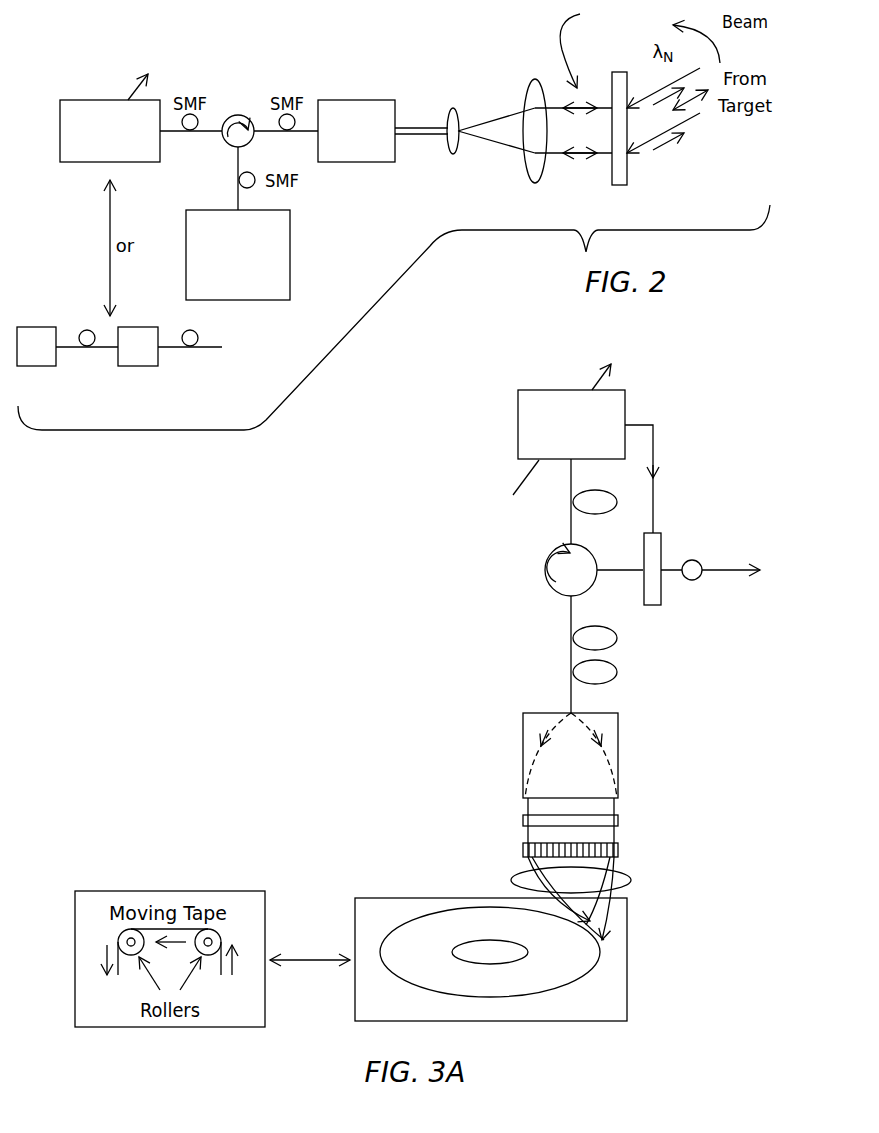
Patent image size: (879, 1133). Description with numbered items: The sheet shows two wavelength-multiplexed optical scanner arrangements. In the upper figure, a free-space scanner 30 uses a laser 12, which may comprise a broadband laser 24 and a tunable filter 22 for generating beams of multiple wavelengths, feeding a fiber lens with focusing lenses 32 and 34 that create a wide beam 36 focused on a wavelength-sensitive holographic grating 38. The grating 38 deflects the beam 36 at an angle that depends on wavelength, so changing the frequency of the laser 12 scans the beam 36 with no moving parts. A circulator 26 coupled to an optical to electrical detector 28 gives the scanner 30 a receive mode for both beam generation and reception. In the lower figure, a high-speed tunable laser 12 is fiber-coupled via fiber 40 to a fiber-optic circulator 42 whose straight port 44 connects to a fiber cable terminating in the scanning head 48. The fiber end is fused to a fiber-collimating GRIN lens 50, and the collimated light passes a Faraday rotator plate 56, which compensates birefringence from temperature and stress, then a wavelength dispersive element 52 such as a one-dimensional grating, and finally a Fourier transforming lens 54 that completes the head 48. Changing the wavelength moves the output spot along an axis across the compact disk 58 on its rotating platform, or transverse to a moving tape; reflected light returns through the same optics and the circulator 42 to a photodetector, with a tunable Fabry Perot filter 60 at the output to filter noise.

In FIG. 2, the laser 12 is at (128, 162).
In FIG. 3A, the laser 12 is at (625, 393).
In FIG. 2, the tunable filter 22 is at (137, 366).
In FIG. 2, the broadband laser 24 is at (37, 366).
In FIG. 2, the circulator 26 is at (239, 114).
In FIG. 2, the optical to electrical detector 28 is at (290, 253).
In FIG. 2, the free-space scanner 30 is at (304, 28).
In FIG. 2, the focusing lens 32 is at (453, 108).
In FIG. 2, the focusing lens 34 is at (535, 78).
In FIG. 2, the beam 36 is at (640, 44).
In FIG. 2, the holographic grating 38 is at (627, 180).
In FIG. 3A, the fiber 40 is at (571, 524).
In FIG. 3A, the fiber-optic circulator 42 is at (550, 588).
In FIG. 3A, the straight port 44 is at (557, 600).
In FIG. 3A, the scanning head 48 is at (618, 760).
In FIG. 3A, the fiber-collimating lens 50 is at (587, 778).
In FIG. 3A, the wavelength dispersive element 52 is at (620, 852).
In FIG. 3A, the Fourier transforming lens 54 is at (637, 861).
In FIG. 3A, the Faraday rotator plate 56 is at (523, 819).
In FIG. 3A, the compact disk 58 is at (603, 950).
In FIG. 3A, the tunable Fabry Perot filter 60 is at (665, 535).